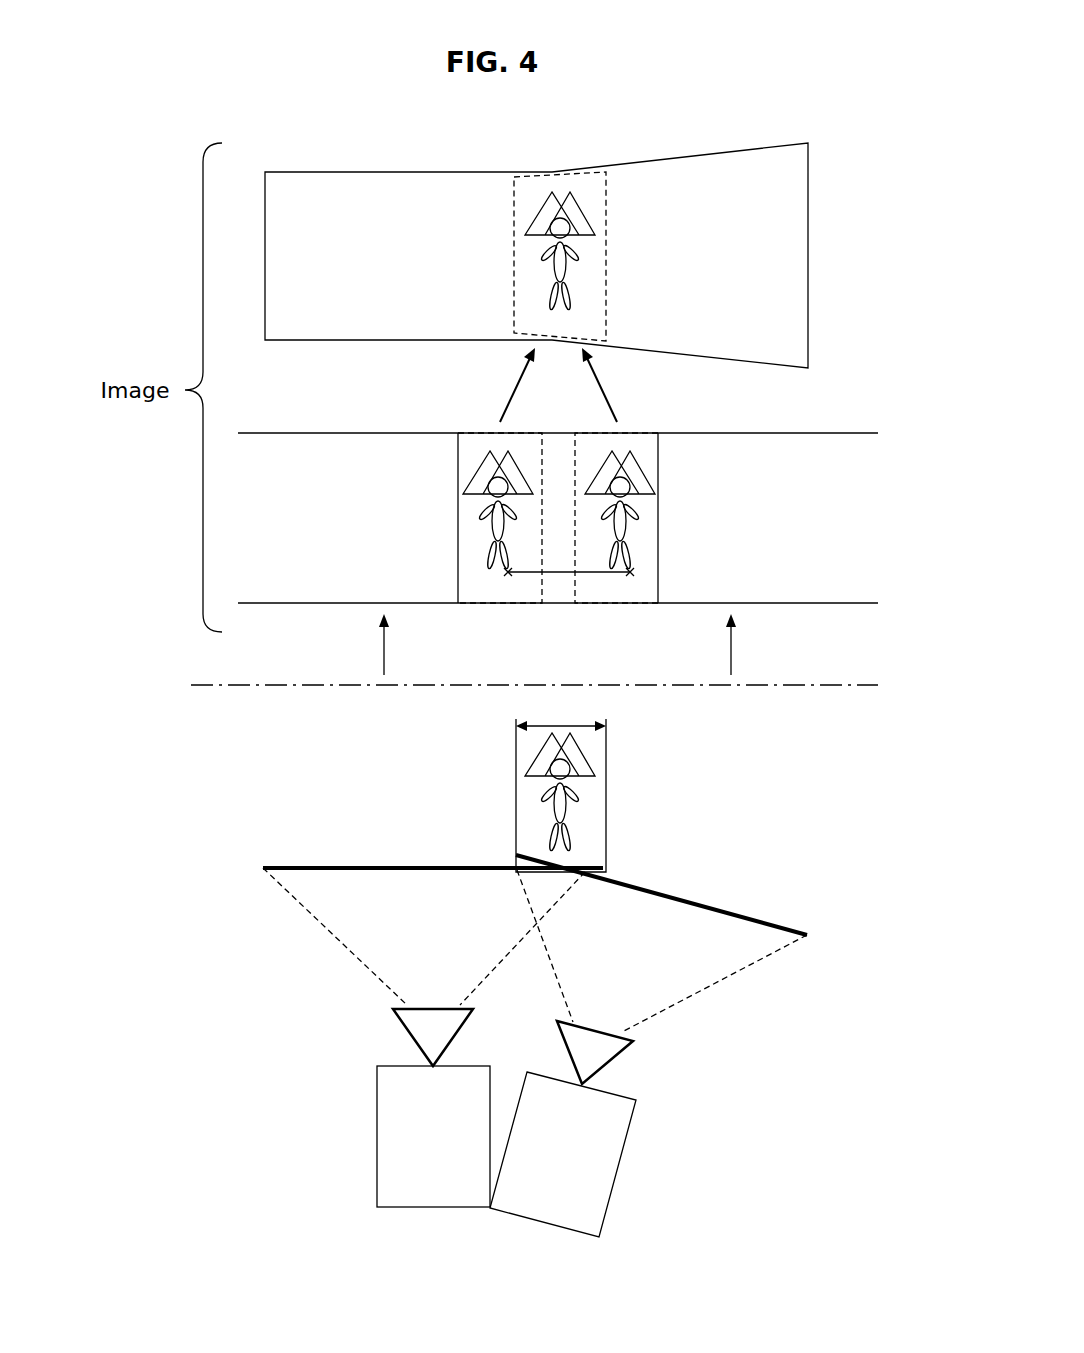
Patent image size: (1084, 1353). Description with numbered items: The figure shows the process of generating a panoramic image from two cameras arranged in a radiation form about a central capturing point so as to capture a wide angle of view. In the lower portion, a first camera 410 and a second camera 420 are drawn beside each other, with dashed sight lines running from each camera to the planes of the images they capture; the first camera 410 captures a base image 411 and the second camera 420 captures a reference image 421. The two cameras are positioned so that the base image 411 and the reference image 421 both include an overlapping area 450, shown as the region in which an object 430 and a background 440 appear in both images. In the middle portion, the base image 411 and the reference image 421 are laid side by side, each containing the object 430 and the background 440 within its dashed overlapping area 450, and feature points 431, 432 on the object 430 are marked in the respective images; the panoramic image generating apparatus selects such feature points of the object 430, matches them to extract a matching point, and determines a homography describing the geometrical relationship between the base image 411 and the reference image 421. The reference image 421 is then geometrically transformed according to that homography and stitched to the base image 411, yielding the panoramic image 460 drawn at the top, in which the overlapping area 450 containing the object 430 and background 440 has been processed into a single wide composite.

The first camera 410 is at (377, 1140).
The base image 411 is at (347, 432).
The second camera 420 is at (618, 1165).
The reference image 421 is at (763, 432).
The object 430 is at (600, 517).
The first feature point 431 is at (508, 577).
The second feature point 432 is at (630, 577).
The background 440 is at (484, 462).
The overlapping area 450 is at (563, 179).
The panoramic image 460 is at (720, 165).